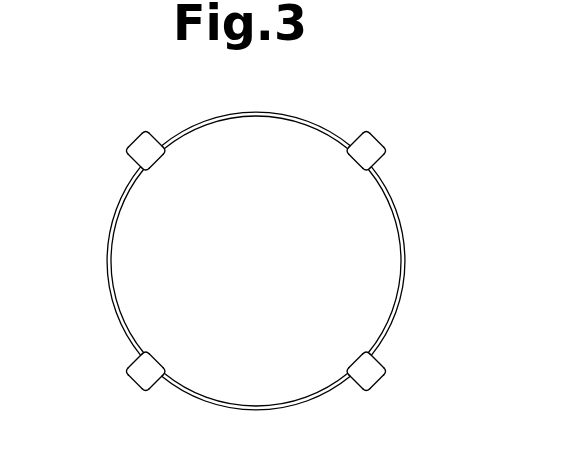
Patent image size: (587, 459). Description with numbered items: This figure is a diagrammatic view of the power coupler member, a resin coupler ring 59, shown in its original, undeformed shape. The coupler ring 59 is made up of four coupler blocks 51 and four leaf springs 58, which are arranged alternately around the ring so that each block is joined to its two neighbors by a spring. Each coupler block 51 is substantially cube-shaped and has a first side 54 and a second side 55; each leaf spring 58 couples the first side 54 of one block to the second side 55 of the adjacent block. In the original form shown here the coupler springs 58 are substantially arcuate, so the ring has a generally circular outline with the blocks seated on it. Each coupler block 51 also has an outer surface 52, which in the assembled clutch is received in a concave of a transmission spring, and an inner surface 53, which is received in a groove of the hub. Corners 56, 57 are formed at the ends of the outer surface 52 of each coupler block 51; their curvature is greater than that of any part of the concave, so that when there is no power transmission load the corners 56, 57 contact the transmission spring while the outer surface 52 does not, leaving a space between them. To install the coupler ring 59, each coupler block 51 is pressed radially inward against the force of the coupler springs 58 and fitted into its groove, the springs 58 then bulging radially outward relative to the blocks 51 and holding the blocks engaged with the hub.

The coupler block 51 is at (132, 162).
The outer surface 52 is at (135, 139).
The inner surface 53 is at (159, 164).
The first side 54 is at (146, 172).
The second side 55 is at (167, 150).
The corner 56 is at (125, 151).
The corner 57 is at (146, 129).
The leaf spring 58 is at (262, 113).
The coupler ring 59 is at (277, 255).